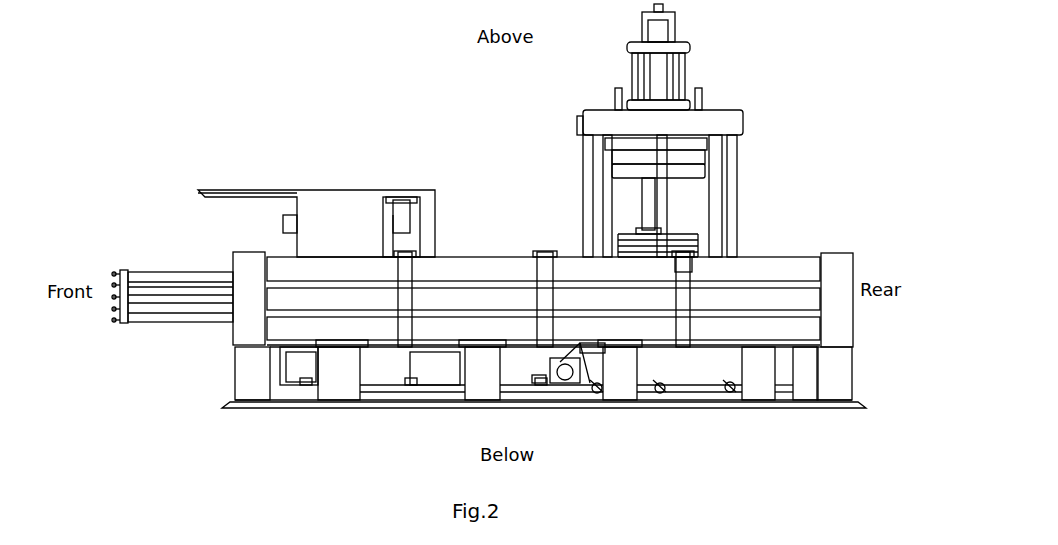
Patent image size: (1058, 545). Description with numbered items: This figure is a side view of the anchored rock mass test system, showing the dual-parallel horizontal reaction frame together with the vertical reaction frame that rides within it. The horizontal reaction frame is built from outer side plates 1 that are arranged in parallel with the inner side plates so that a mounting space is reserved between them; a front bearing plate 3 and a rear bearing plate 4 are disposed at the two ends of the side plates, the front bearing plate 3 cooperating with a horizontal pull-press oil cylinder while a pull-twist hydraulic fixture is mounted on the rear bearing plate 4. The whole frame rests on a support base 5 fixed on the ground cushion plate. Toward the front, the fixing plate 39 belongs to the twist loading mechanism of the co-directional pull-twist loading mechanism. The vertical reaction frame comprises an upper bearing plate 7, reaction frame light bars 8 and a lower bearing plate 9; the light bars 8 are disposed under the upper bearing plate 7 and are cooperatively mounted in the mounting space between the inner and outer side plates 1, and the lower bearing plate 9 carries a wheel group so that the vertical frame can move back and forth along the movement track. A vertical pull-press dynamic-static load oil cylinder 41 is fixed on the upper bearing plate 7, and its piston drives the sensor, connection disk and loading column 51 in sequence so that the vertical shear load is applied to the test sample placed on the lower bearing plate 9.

The outer side plate 1 is at (487, 315).
The front bearing plate 3 is at (260, 313).
The rear bearing plate 4 is at (837, 315).
The support base 5 is at (622, 370).
The upper bearing plate 7 is at (708, 120).
The reaction frame light bar 8 is at (730, 197).
The lower bearing plate 9 is at (660, 363).
The fixing plate 39 is at (348, 225).
The vertical pull-press dynamic-static load oil cylinder 41 is at (660, 90).
The loading column 51 is at (652, 200).